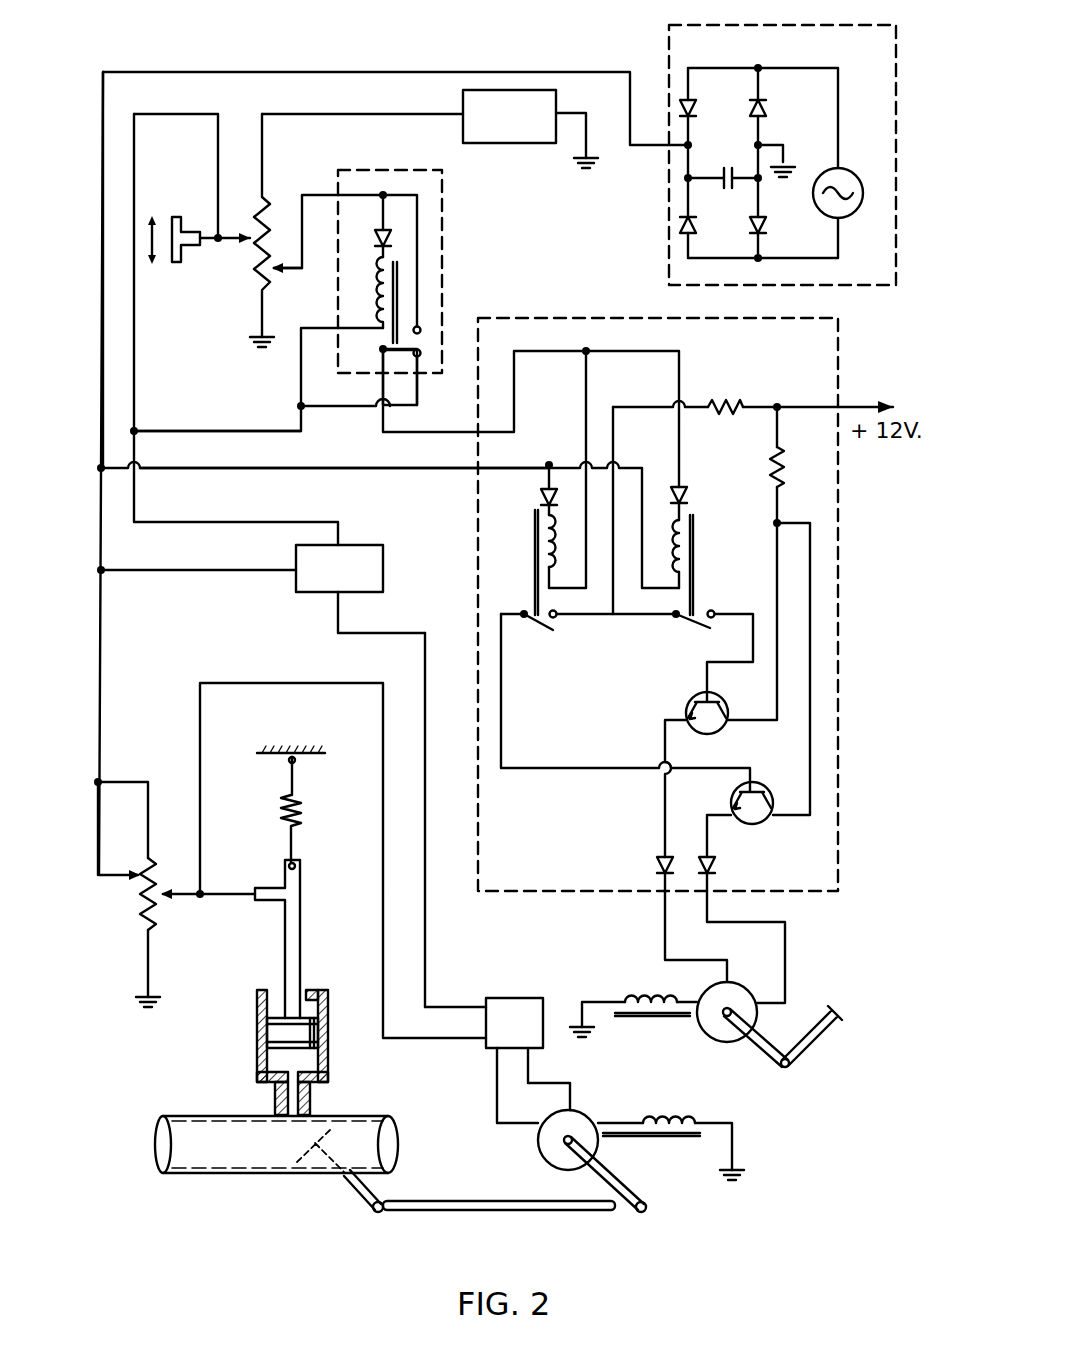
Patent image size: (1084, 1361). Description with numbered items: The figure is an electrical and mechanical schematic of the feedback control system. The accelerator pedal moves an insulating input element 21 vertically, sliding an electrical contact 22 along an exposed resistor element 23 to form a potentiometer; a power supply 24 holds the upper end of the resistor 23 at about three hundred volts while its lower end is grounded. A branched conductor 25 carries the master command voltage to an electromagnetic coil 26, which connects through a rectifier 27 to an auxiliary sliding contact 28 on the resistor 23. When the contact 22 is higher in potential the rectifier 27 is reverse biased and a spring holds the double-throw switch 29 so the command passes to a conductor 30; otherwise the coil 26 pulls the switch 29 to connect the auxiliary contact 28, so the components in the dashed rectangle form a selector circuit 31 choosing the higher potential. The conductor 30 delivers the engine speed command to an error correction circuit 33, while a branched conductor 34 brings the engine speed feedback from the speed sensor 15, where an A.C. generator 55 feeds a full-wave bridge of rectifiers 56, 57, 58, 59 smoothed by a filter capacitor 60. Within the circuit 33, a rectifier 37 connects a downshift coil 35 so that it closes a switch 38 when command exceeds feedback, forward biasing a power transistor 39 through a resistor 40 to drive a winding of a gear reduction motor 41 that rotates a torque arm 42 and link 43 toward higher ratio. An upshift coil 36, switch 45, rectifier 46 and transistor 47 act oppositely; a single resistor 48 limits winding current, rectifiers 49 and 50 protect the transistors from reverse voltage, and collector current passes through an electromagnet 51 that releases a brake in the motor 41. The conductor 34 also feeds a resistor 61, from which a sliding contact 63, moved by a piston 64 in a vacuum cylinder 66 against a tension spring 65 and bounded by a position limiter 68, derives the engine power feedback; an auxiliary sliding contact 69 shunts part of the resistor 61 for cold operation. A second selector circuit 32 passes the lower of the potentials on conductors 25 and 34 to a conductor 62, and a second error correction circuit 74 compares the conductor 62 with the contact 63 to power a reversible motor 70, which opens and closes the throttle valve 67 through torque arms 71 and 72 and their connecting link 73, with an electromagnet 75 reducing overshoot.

The speed sensor 15 is at (835, 283).
The input element 21 is at (174, 222).
The electrical contact 22 is at (229, 244).
The resistor element 23 is at (265, 204).
The power supply 24 is at (462, 127).
The branched conductor 25 is at (160, 425).
The electromagnetic coil 26 is at (376, 282).
The rectifier 27 is at (392, 240).
The auxiliary sliding contact 28 is at (295, 270).
The double-throw switch 29 is at (410, 347).
The conductor 30 is at (431, 433).
The selector circuit 31 is at (442, 267).
The selector circuit 32 is at (382, 544).
The error correction circuit 33 is at (628, 318).
The branched conductor 34 is at (327, 469).
The electromagnetic coil 35 is at (676, 570).
The upshift coil 36 is at (555, 563).
The rectifier 37 is at (687, 487).
The switch 38 is at (690, 628).
The power transistor 39 is at (686, 712).
The resistor 40 is at (733, 402).
The gear reduction motor 41 is at (712, 1027).
The torque arm 42 is at (763, 1055).
The link 43 is at (815, 1047).
The switch 45 is at (542, 627).
The rectifier 46 is at (542, 497).
The transistor 47 is at (761, 784).
The resistor 48 is at (782, 478).
The rectifier 49 is at (653, 860).
The rectifier 50 is at (712, 860).
The electromagnet 51 is at (627, 993).
The A.C. generator 55 is at (851, 171).
The rectifier 56 is at (764, 227).
The rectifier 57 is at (764, 113).
The rectifier 58 is at (684, 99).
The rectifier 59 is at (681, 225).
The filter capacitor 60 is at (725, 167).
The resistor 61 is at (155, 910).
The conductor 62 is at (428, 782).
The sliding contact 63 is at (225, 893).
The piston 64 is at (282, 1032).
The tension spring 65 is at (302, 805).
The cylinder 66 is at (330, 1055).
The throttle valve 67 is at (317, 1137).
The position limiter 68 is at (313, 988).
The auxiliary sliding contact 69 is at (115, 876).
The reversible motor 70 is at (547, 1147).
The torque arm 71 is at (350, 1187).
The torque arm 72 is at (610, 1175).
The connecting link 73 is at (517, 1207).
The error correction circuit 74 is at (512, 997).
The electromagnet 75 is at (655, 1120).